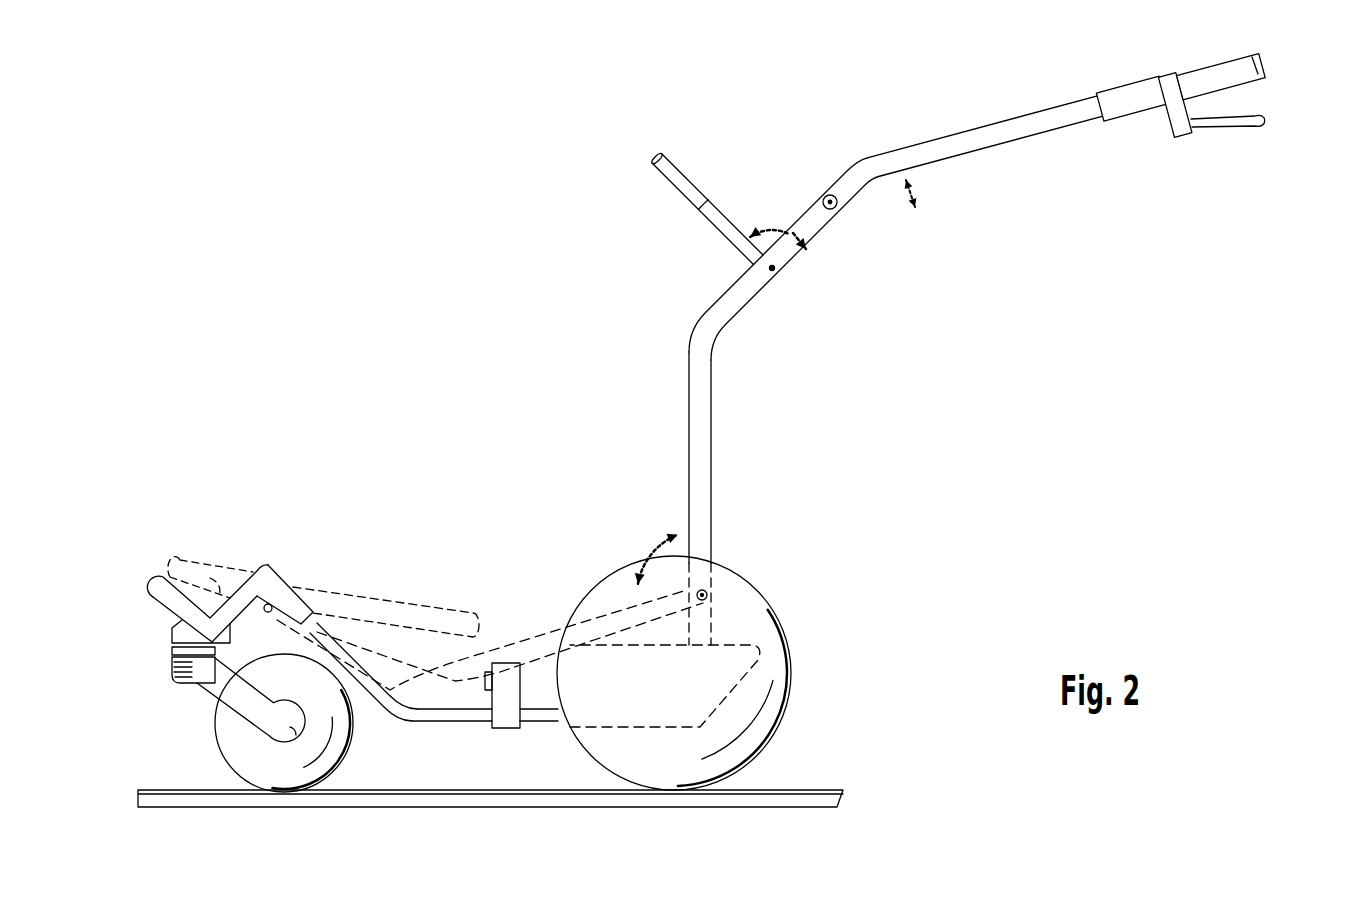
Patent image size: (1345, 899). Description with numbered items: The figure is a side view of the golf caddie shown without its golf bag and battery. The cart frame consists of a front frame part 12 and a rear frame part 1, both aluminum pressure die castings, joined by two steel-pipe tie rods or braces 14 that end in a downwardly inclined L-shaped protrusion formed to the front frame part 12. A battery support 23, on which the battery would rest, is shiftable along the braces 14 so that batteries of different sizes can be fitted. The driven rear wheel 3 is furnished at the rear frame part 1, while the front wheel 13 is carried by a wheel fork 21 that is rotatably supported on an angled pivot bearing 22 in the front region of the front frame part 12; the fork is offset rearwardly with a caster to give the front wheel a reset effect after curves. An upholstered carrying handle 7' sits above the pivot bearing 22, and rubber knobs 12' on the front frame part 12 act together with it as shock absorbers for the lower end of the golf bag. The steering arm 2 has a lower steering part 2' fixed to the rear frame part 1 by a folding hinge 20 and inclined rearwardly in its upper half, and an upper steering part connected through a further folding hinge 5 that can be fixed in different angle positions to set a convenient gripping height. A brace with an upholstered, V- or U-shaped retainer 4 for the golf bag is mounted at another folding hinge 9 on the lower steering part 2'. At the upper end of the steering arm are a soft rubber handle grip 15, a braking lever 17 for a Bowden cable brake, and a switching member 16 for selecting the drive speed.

The rear frame part 1 is at (556, 742).
The steering arm 2 is at (745, 259).
The lower steering part 2' is at (737, 457).
The rear wheel 3 is at (777, 678).
The retainer 4 is at (687, 183).
The folding hinge 5 is at (843, 206).
The carrying handle 7' is at (303, 573).
The folding hinge 9 is at (780, 264).
The front frame part 12 is at (480, 588).
The rubber knobs 12' is at (244, 553).
The front wheel 13 is at (327, 763).
The braces 14 is at (377, 700).
The handle grip 15 is at (1260, 66).
The switching member 16 is at (1110, 102).
The braking lever 17 is at (1267, 118).
The folding hinge 20 is at (710, 590).
The wheel fork 21 is at (218, 688).
The pivot bearing 22 is at (193, 696).
The battery support 23 is at (510, 672).